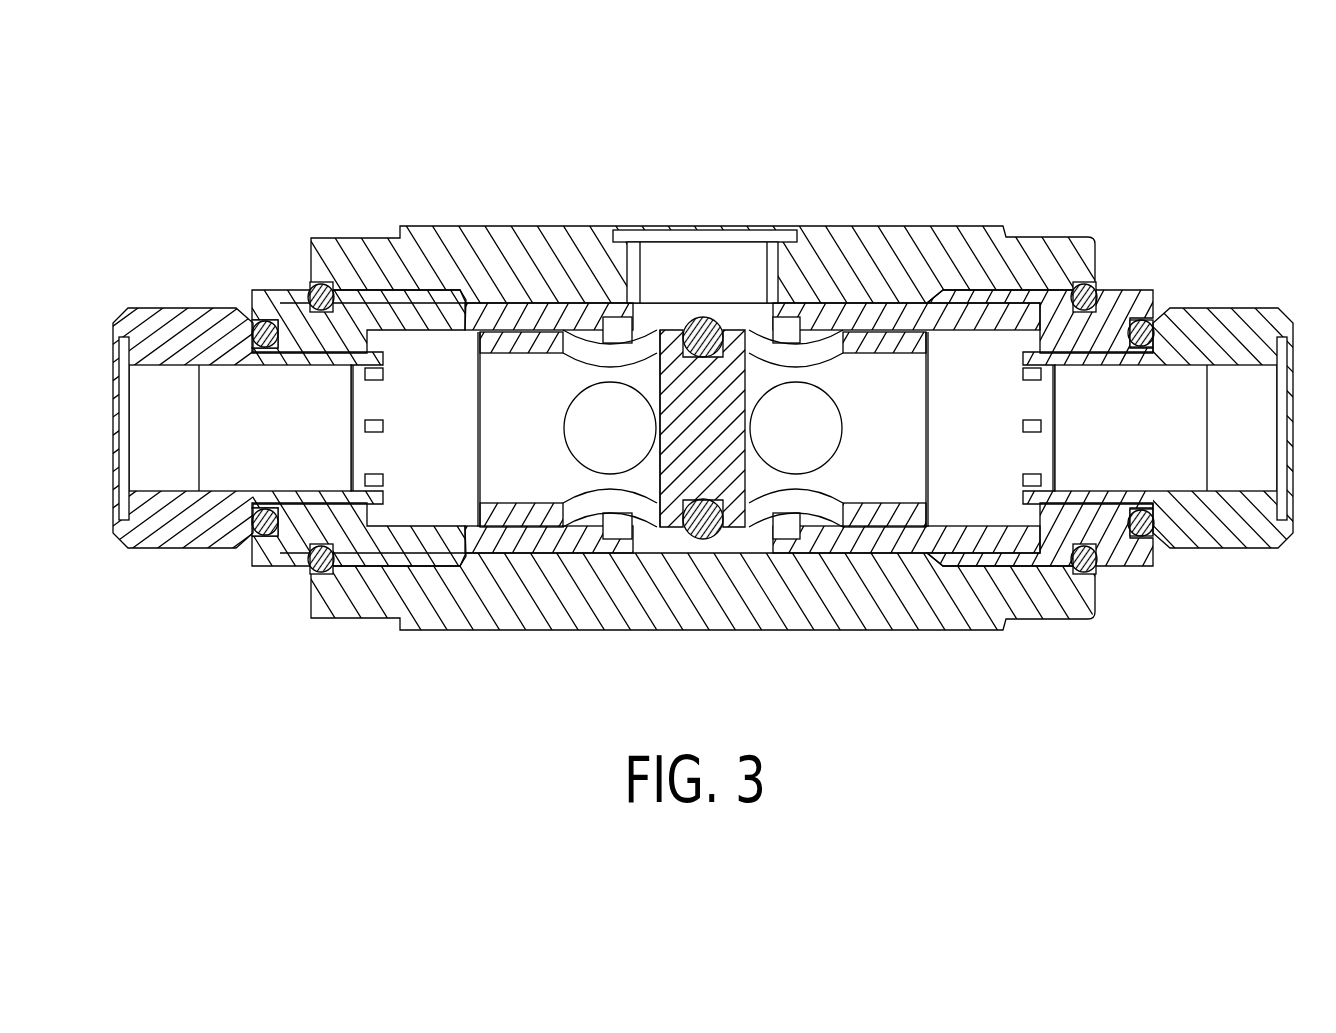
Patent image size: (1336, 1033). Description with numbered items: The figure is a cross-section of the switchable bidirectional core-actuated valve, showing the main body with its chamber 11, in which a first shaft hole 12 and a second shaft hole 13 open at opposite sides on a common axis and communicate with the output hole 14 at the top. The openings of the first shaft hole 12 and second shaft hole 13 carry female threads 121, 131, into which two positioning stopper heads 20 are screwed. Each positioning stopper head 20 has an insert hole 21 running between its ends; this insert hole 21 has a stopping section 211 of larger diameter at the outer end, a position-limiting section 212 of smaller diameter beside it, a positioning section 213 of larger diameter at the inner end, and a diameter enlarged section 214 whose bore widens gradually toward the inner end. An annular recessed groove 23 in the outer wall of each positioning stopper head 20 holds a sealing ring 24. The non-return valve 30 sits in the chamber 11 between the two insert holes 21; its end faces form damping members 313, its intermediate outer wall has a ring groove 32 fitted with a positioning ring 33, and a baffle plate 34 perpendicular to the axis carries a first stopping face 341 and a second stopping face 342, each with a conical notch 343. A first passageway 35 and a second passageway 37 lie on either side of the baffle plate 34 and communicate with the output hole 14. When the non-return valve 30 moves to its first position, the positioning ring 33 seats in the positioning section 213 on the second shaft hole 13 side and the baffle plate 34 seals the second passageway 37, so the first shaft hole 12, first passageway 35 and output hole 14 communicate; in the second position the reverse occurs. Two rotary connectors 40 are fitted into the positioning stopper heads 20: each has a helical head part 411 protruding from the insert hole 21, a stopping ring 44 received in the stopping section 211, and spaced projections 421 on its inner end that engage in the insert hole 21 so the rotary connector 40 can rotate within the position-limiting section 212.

The chamber 11 is at (760, 537).
The first shaft hole 12 is at (1042, 275).
The female threads 121 is at (997, 300).
The second shaft hole 13 is at (373, 290).
The female threads 131 is at (416, 303).
The output hole 14 is at (660, 256).
The positioning stopper head 20 is at (1116, 280).
The insert hole 21 is at (405, 262).
The stopping section 211 is at (270, 290).
The position-limiting section 212 is at (314, 328).
The positioning section 213 is at (597, 317).
The diameter enlarged section 214 is at (510, 373).
The annular recessed groove 23 is at (350, 572).
The sealing ring 24 is at (322, 577).
The non-return valve 30 is at (521, 532).
The damping member 313 is at (918, 520).
The ring groove 32 is at (720, 322).
The positioning ring 33 is at (695, 539).
The baffle plate 34 is at (733, 480).
The first stopping face 341 is at (803, 332).
The second stopping face 342 is at (600, 500).
The conical notch 343 is at (655, 448).
The first passageway 35 is at (885, 387).
The second passageway 37 is at (450, 353).
The rotary connector 40 is at (1259, 298).
The helical head part 411 is at (1216, 318).
The spaced projections 421 is at (1028, 515).
The stopping ring 44 is at (263, 542).